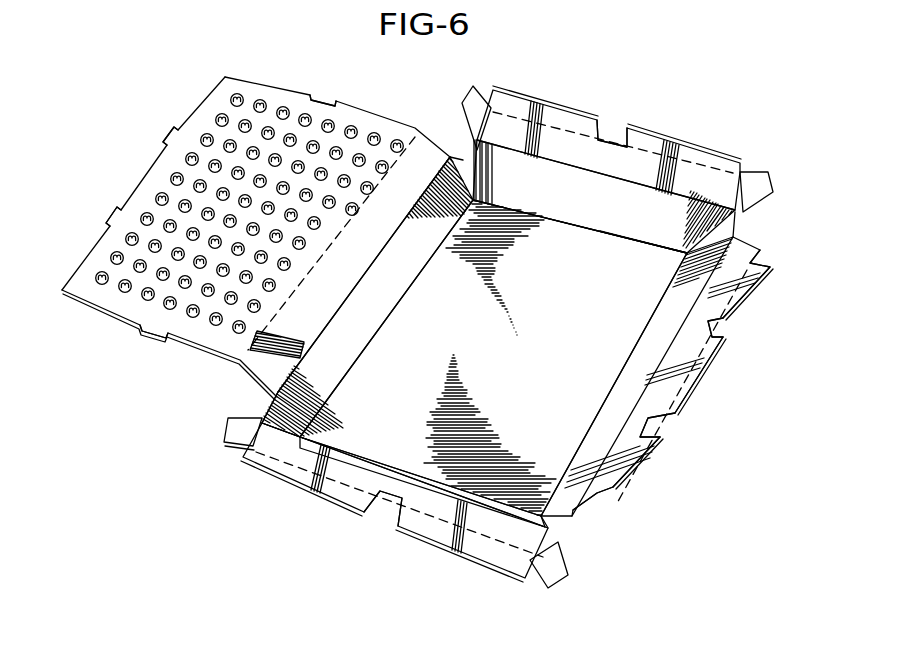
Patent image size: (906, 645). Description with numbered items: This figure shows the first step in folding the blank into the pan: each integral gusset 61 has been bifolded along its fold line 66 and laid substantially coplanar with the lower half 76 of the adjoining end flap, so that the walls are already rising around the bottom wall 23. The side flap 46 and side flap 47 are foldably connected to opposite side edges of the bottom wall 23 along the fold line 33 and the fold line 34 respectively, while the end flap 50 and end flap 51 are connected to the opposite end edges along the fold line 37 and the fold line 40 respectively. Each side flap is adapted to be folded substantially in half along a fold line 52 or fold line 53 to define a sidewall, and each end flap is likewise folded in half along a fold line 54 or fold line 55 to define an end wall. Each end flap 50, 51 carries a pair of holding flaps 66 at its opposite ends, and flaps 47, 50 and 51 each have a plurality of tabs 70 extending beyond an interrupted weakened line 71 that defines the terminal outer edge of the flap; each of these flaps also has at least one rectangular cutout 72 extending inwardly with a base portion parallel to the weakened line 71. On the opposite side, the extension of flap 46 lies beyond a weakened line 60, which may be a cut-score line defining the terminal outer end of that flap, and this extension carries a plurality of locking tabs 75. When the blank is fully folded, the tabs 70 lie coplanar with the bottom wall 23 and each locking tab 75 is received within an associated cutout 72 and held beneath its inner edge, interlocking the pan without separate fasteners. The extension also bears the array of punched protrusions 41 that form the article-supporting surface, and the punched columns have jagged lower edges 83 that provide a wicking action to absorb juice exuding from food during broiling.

The bottom wall 23 is at (549, 372).
The fold line 33 is at (368, 332).
The fold line 34 is at (628, 345).
The fold line 37 is at (396, 466).
The fold line 40 is at (624, 237).
The protrusions 41 is at (160, 196).
The side flap 46 is at (412, 116).
The side flap 47 is at (769, 255).
The end flap 50 is at (233, 461).
The end flap 51 is at (535, 76).
The fold line 52 is at (358, 290).
The fold line 53 is at (655, 358).
The fold line 54 is at (430, 508).
The fold line 55 is at (560, 166).
The weakened line 60 is at (254, 345).
The integral gusset 61 is at (464, 151).
The holding flap 66 is at (466, 101).
The tab 70 is at (571, 121).
The interrupted weakened line 71 is at (694, 166).
The rectangular cutout 72 is at (604, 132).
The locking tab 75 is at (331, 101).
The lower half of end flap 76 is at (592, 214).
The jagged lower edges 83 is at (146, 301).